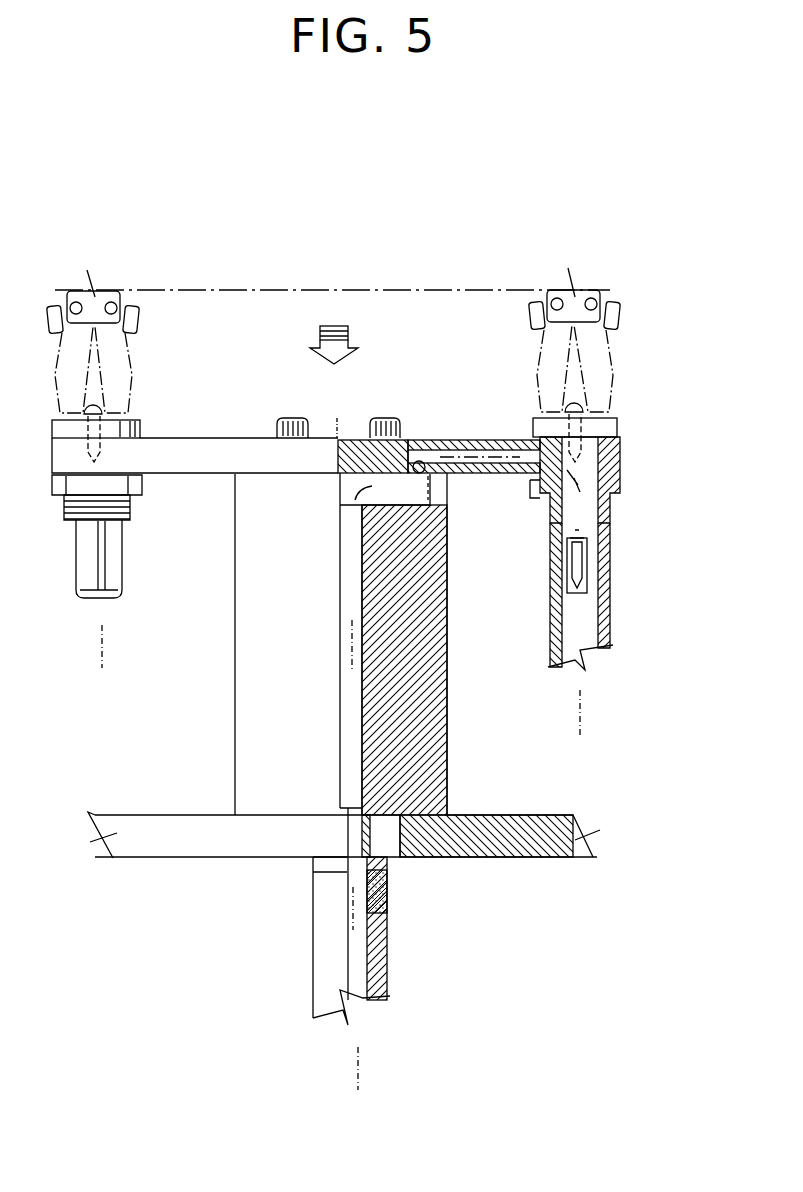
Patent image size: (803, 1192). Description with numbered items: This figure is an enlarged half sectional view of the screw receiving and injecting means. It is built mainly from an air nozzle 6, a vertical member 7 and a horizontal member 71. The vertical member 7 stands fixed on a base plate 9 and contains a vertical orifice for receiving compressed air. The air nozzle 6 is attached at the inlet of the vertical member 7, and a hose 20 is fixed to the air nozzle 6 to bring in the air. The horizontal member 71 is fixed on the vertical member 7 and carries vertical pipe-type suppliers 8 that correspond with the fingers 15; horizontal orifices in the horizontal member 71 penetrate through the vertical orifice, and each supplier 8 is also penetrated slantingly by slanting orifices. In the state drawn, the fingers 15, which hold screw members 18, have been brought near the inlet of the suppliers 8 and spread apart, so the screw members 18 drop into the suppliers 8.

The air nozzle 6 is at (390, 884).
The vertical member 7 is at (447, 750).
The supplier 8 is at (613, 507).
The base plate 9 is at (542, 826).
The finger 15 is at (617, 372).
The screw member 18 is at (597, 575).
The hose 20 is at (390, 953).
The horizontal member 71 is at (185, 462).